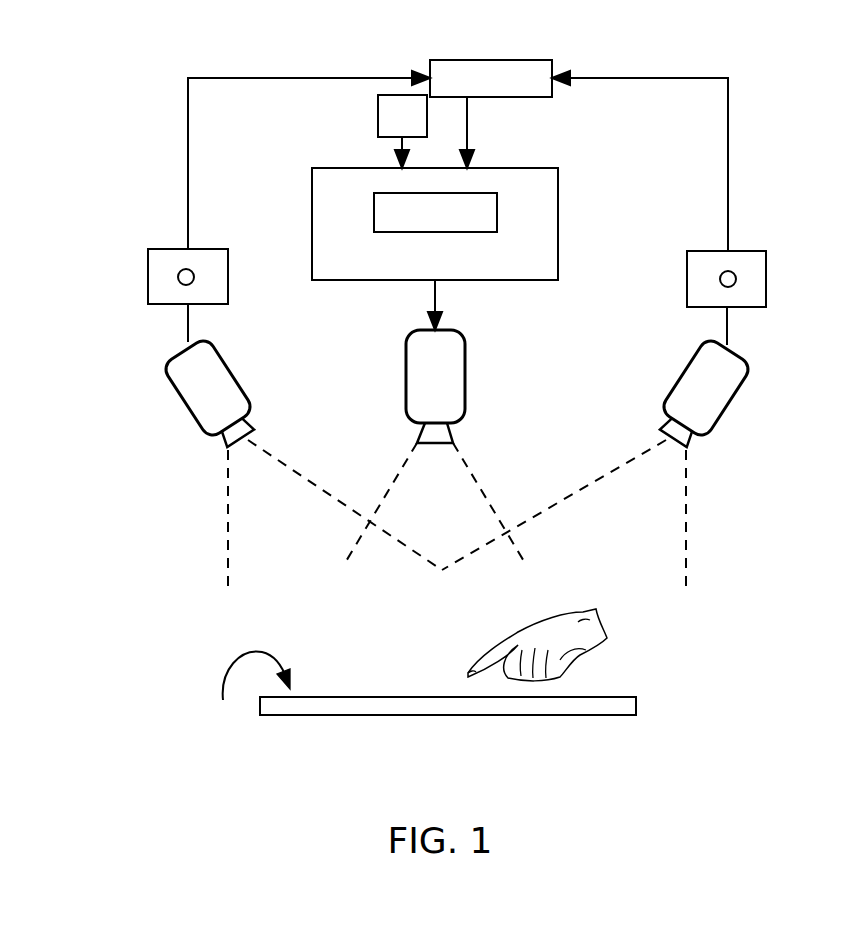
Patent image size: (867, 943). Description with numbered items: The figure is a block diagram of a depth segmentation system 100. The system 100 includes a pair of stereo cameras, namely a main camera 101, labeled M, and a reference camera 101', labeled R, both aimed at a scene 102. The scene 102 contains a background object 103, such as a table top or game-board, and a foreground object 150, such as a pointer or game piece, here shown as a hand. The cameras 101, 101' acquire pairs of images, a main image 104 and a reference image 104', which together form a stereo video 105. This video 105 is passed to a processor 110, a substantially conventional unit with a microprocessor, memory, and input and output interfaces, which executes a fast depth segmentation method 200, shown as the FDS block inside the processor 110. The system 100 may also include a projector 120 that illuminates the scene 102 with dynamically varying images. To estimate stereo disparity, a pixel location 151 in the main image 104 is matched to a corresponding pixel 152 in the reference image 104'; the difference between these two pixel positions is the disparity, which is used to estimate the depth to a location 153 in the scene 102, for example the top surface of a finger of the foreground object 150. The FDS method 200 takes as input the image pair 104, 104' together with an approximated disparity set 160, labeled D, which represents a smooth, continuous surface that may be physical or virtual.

The depth segmentation system 100 is at (345, 376).
The main camera 101 is at (199, 400).
The reference camera 101' is at (716, 401).
The scene 102 is at (244, 694).
The background object 103 is at (545, 715).
The main image 104 is at (146, 253).
The reference image 104' is at (770, 256).
The stereo video 105 is at (497, 60).
The processor 110 is at (558, 257).
The projector 120 is at (465, 383).
The foreground object 150 is at (584, 655).
The pixel location (x, y) 151 is at (186, 269).
The corresponding pixel 152 is at (728, 271).
The location 153 is at (468, 675).
The approximated disparity set 160 is at (378, 116).
The fast depth segmentation method 200 is at (497, 212).